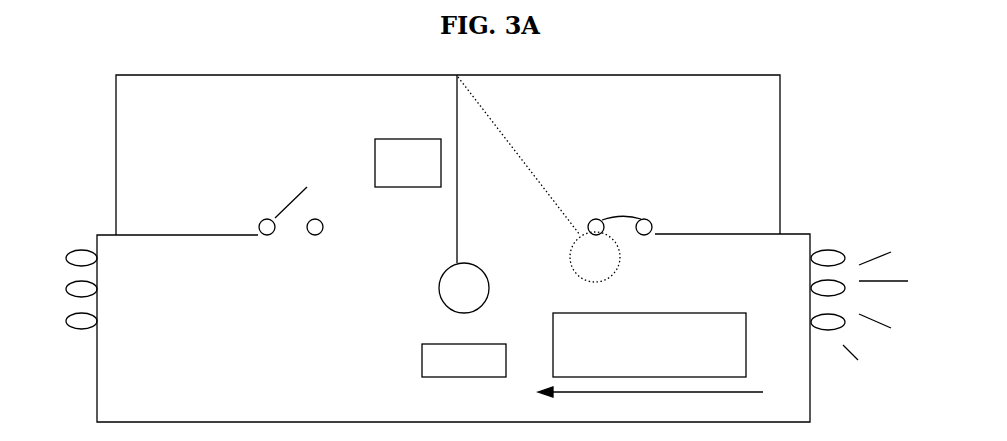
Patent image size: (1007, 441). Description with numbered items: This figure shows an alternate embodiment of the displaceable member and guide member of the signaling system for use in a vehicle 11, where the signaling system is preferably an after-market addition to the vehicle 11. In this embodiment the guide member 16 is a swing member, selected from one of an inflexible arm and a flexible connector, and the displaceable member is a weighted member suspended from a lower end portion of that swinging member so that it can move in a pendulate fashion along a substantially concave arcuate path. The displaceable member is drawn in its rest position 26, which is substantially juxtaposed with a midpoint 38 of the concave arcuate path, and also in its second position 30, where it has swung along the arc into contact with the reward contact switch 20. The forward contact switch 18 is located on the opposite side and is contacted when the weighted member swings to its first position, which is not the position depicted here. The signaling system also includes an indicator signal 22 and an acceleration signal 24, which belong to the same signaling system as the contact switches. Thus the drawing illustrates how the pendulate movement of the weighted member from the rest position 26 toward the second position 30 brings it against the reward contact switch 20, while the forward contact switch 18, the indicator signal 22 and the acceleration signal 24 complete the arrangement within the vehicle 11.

The vehicle 11 is at (650, 355).
The guide member 16 is at (416, 169).
The forward contact switch 18 is at (292, 187).
The reward contact switch 20 is at (620, 203).
The indicator signal 22 is at (57, 265).
The acceleration signal 24 is at (843, 250).
The rest position 26 is at (464, 288).
The second position 30 is at (539, 179).
The midpoint 38 is at (464, 360).